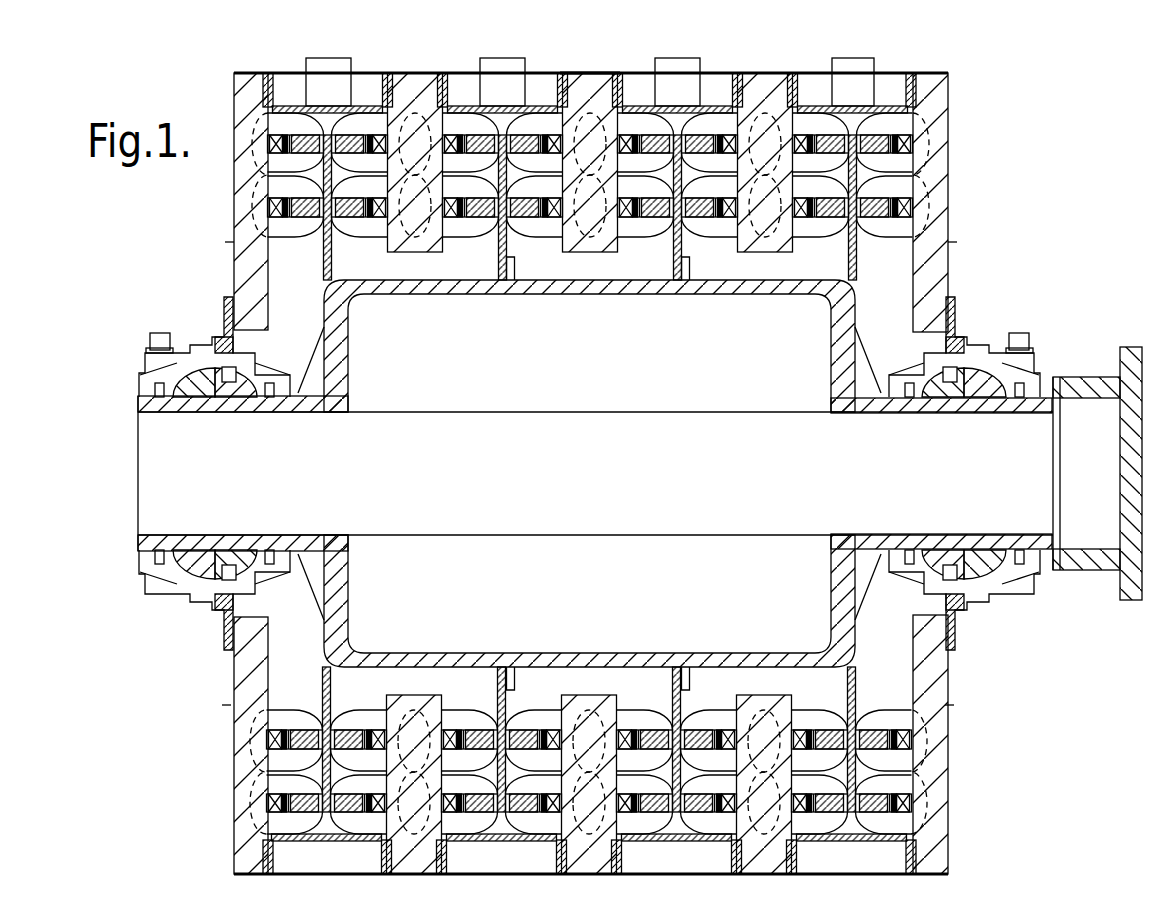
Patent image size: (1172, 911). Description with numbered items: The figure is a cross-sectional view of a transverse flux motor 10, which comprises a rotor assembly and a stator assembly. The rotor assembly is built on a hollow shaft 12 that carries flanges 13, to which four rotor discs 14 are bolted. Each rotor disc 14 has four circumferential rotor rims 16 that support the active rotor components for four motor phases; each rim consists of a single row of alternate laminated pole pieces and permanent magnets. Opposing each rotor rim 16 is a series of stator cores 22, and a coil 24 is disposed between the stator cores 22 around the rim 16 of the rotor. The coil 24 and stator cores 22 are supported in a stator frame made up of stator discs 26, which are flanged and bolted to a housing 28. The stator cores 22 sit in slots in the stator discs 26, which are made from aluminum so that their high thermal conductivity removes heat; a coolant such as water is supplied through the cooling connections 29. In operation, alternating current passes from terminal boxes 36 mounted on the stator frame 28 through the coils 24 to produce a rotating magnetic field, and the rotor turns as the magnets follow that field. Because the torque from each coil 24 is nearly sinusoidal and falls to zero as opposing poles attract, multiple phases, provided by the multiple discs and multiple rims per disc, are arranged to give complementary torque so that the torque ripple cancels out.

The transverse flux motor 10 is at (960, 66).
The hollow shaft 12 is at (601, 293).
The flanges 13 is at (513, 263).
The rotor discs 14 is at (670, 255).
The rotor rims 16 is at (833, 234).
The stator cores 22 is at (367, 228).
The coil 24 is at (276, 222).
The stator discs 26 is at (946, 172).
The housing 28 is at (623, 87).
The cooling connections 29 is at (591, 71).
The terminal boxes 36 is at (497, 82).